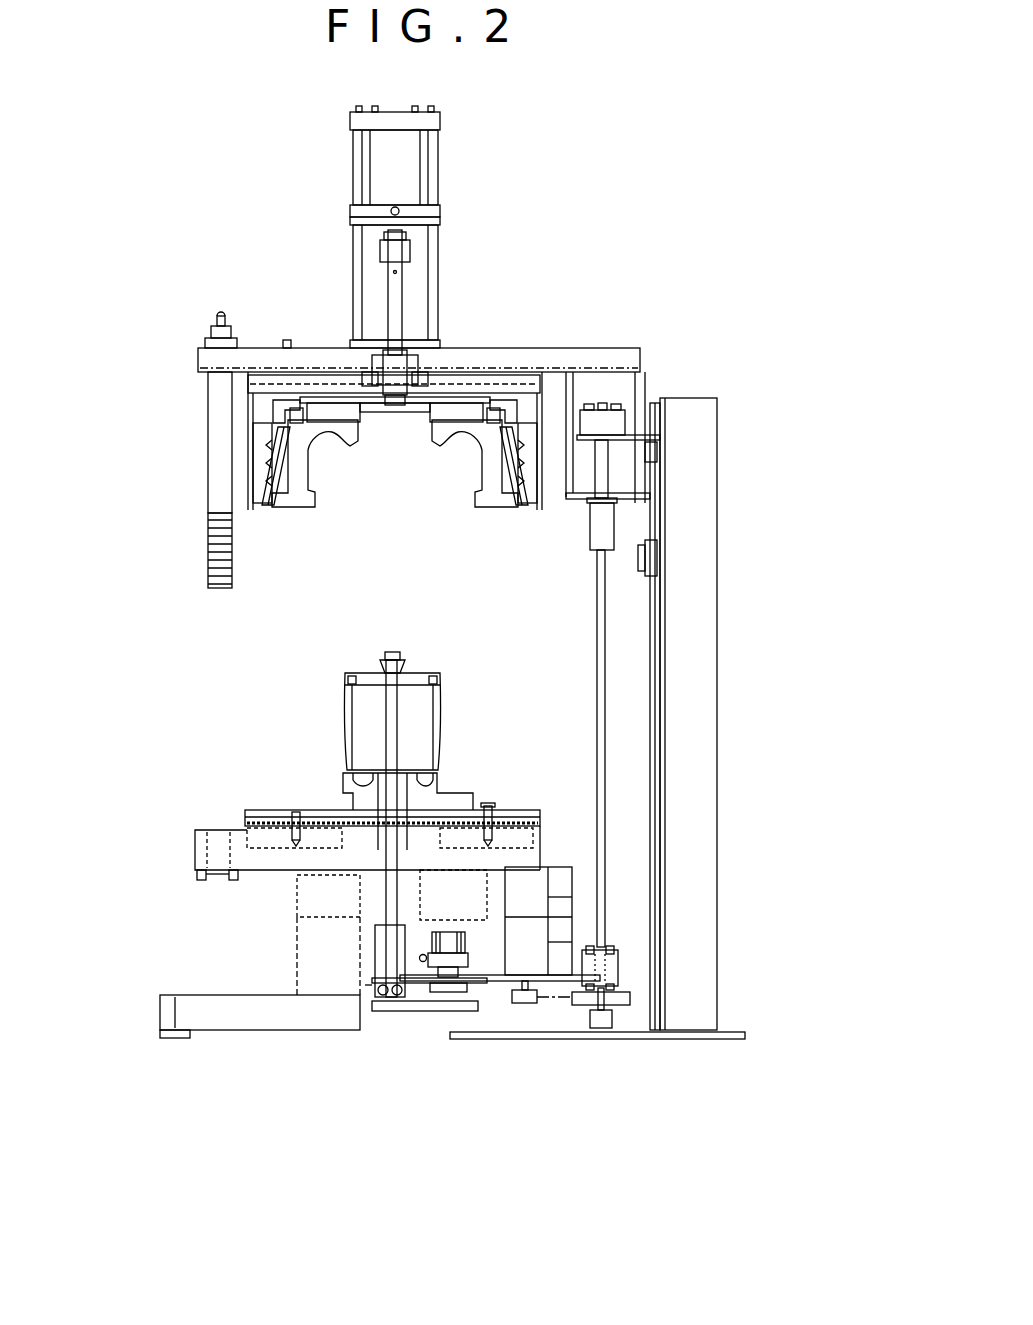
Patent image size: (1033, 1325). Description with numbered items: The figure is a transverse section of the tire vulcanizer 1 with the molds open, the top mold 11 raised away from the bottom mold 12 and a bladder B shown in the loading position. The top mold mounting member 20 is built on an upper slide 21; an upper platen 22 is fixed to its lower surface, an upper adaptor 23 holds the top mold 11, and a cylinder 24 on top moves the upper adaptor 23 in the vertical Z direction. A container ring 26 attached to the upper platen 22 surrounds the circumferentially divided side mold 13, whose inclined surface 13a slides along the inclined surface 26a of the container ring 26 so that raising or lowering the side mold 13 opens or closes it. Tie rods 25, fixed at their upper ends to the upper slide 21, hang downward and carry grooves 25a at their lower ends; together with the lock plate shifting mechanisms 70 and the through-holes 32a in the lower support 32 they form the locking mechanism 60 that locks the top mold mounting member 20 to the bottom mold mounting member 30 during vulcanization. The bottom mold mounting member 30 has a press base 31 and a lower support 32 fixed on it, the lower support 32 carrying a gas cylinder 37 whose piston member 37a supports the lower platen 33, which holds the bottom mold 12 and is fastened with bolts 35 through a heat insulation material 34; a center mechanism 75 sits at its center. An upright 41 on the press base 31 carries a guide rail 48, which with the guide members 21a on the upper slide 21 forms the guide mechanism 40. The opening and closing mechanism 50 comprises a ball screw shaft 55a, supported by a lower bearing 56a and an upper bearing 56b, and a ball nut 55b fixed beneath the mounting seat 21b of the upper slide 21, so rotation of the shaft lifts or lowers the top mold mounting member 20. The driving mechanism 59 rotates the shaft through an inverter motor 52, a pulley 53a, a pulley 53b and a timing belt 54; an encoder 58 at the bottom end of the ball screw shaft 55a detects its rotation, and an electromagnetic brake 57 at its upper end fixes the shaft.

The tire vulcanizer 1 is at (259, 218).
The top mold mounting member 20 is at (261, 311).
The upper slide 21 is at (535, 365).
The guide members 21a is at (658, 430).
The mounting seat 21b is at (622, 488).
The upper platen 22 is at (345, 385).
The upper adaptor 23 is at (450, 395).
The cylinder 24 is at (353, 166).
The tie rods 25 is at (220, 505).
The grooves 25a is at (234, 582).
The container ring 26 is at (250, 430).
The inclined surface 26a is at (252, 475).
The top mold 11 is at (320, 462).
The side mold 13 is at (342, 462).
The inclined surface 13a is at (283, 500).
The bottom mold 12 is at (330, 793).
The bottom mold mounting member 30 is at (295, 1045).
The press base 31 is at (222, 1017).
The lower support 32 is at (264, 872).
The through-holes 32a is at (197, 830).
The lower platen 33 is at (262, 823).
The heat insulation material 34 is at (510, 826).
The bolts 35 is at (487, 808).
The gas cylinder 37 is at (296, 820).
The piston member 37a is at (297, 870).
The guide mechanism 40 is at (775, 578).
The upright 41 is at (690, 378).
The guide rail 48 is at (656, 631).
The opening and closing mechanism 50 is at (628, 959).
The inverter motor 52 is at (518, 943).
The pulley 53a is at (522, 1003).
The pulley 53b is at (585, 1005).
The timing belt 54 is at (555, 1000).
The ball screw shaft 55a is at (606, 788).
The ball nut 55b is at (604, 526).
The lower bearing 56a is at (616, 985).
The upper bearing 56b is at (598, 455).
The electromagnetic brake 57 is at (608, 406).
The encoder 58 is at (602, 1022).
The driving mechanism 59 is at (600, 1090).
The locking mechanism 60 is at (115, 622).
The lock plate shifting mechanisms 70 is at (185, 873).
The center mechanism 75 is at (375, 711).
The bladder B is at (440, 708).
The Z direction Z is at (745, 824).